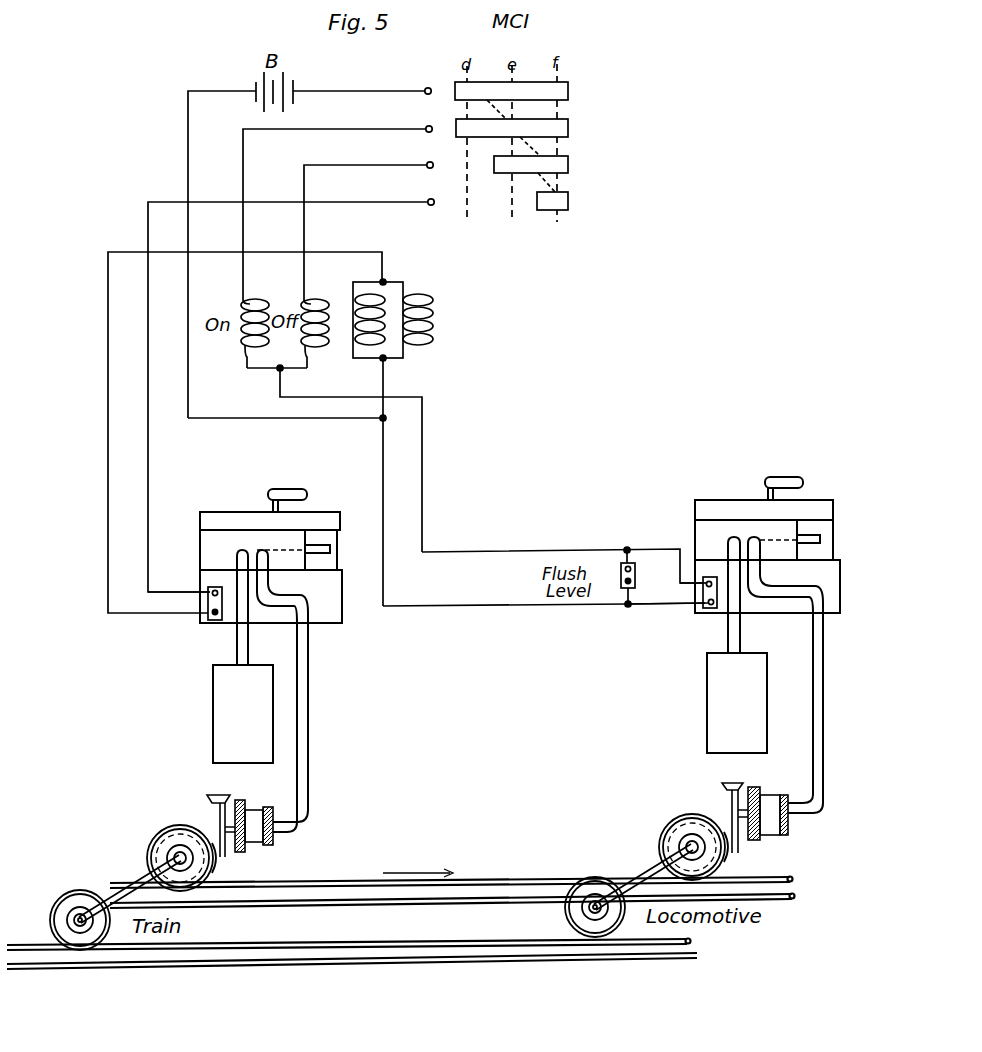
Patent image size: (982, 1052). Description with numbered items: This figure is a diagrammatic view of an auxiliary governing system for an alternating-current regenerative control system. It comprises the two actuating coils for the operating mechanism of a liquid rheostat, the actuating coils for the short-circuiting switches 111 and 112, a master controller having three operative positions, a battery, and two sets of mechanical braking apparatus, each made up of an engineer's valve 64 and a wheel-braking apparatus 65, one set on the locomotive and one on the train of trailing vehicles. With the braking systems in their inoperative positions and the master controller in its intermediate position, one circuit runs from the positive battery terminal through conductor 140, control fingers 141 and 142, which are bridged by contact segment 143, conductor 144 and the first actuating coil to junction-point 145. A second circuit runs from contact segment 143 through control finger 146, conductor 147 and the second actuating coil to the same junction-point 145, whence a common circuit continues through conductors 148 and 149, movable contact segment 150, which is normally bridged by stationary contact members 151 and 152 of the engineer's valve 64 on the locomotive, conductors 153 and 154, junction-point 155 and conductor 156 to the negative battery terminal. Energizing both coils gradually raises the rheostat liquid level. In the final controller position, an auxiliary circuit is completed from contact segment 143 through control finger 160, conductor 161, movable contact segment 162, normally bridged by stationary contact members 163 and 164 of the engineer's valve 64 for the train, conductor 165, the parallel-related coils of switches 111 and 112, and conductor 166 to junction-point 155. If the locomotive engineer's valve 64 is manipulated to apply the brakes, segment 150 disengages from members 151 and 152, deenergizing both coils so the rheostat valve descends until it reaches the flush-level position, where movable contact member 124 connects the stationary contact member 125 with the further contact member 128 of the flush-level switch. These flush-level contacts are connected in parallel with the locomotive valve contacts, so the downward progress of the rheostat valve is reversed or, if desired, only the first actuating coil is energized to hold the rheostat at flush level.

The conductor 140 is at (306, 242).
The control finger 141 is at (425, 89).
The conductor 144 is at (334, 202).
The control finger 142 is at (426, 127).
The conductor 147 is at (365, 220).
The control finger 146 is at (427, 163).
The conductor 161 is at (149, 452).
The control finger 160 is at (428, 200).
The contact segment 143 is at (533, 143).
The conductor 165 is at (321, 251).
The short-circuiting switch 111 is at (353, 300).
The short-circuiting switch 112 is at (436, 318).
The junction-point 145 is at (279, 370).
The conductor 148 is at (347, 396).
The conductor 166 is at (385, 376).
The conductor 156 is at (292, 421).
The junction-point 155 is at (380, 421).
The conductor 154 is at (546, 608).
The conductor 149 is at (667, 545).
The movable contact member 124 is at (636, 573).
The stationary contact member 125 is at (624, 568).
The switch contact 128 is at (612, 593).
The movable contact segment 150 is at (703, 597).
The stationary contact member 151 is at (703, 585).
The stationary contact member 152 is at (706, 607).
The conductor 153 is at (700, 606).
The stationary contact member 163 is at (212, 592).
The movable contact segment 162 is at (208, 605).
The stationary contact member 164 is at (213, 614).
The engineer's valve 64 is at (252, 506).
The wheel-braking apparatus 65 is at (126, 868).